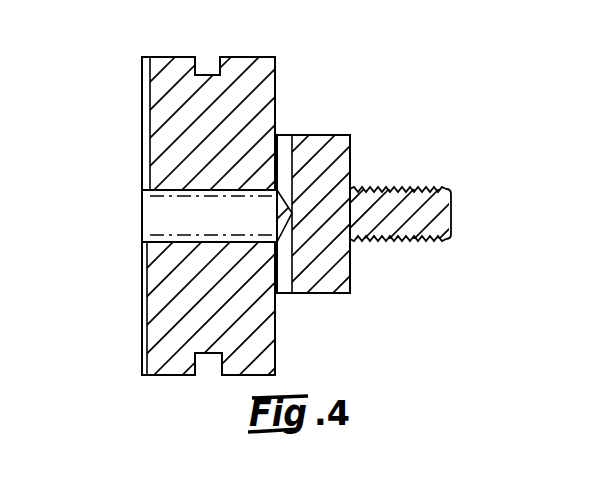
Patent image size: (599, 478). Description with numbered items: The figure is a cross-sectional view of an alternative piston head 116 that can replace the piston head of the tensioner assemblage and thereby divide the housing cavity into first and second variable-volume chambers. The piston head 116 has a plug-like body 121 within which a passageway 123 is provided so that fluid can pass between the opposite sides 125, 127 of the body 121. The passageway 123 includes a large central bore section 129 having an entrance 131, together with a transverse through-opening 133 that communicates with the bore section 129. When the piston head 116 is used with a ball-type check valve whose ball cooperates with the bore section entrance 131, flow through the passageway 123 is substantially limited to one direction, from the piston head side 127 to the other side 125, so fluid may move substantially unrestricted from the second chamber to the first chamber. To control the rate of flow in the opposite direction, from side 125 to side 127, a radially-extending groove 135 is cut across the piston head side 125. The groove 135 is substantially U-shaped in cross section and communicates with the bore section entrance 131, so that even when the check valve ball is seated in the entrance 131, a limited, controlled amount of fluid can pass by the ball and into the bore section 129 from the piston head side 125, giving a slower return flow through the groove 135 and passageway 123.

The piston head 116 is at (134, 86).
The plug-like body 121 is at (243, 56).
The passageway 123 is at (210, 241).
The piston head side 125 is at (143, 320).
The piston head side 127 is at (277, 332).
The central bore section 129 is at (147, 194).
The bore section entrance 131 is at (145, 233).
The transverse through-opening 133 is at (283, 133).
The radially-extending groove 135 is at (150, 113).